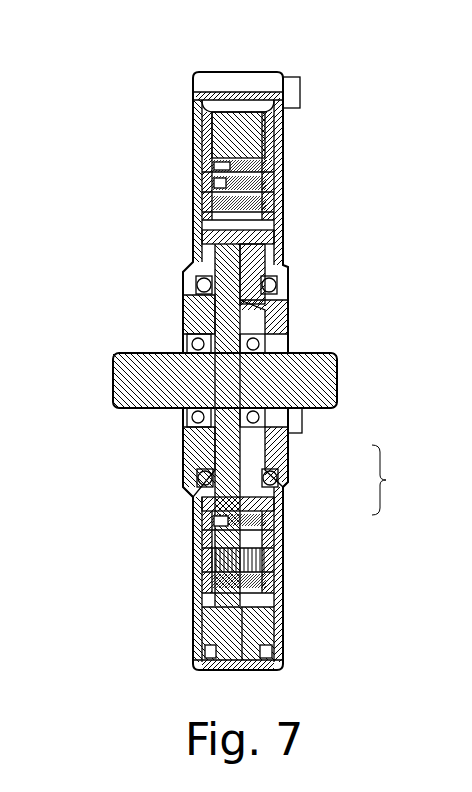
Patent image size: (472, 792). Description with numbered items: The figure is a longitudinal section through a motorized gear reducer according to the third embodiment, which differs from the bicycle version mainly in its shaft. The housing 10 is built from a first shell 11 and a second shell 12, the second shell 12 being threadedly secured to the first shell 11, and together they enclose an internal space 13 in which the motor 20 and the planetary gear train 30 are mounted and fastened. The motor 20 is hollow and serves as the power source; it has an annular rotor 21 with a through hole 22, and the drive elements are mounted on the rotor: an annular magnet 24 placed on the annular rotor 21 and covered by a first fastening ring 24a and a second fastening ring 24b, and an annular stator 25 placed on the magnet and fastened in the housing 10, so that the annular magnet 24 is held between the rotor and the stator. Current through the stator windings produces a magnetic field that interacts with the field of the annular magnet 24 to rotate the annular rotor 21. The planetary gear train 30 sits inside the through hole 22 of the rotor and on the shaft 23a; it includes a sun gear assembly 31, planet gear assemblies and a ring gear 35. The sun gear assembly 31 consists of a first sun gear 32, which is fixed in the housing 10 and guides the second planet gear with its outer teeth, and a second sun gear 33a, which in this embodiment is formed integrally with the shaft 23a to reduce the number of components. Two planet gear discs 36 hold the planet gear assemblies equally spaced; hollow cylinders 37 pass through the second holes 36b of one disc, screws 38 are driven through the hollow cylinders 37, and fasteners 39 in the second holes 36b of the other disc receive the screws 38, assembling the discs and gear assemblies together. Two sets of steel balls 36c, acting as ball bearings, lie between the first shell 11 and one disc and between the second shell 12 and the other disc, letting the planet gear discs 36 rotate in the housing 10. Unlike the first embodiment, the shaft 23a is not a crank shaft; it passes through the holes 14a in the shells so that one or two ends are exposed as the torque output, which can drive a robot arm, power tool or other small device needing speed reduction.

The housing 10 is at (190, 173).
The first shell 11 is at (288, 668).
The second shell 12 is at (200, 668).
The internal space 13 is at (286, 108).
The holes 14a is at (185, 342).
The motor 20 is at (191, 139).
The annular rotor 21 is at (193, 185).
The through hole 22 is at (193, 208).
The shaft 23a is at (128, 383).
The annular magnet 24 is at (285, 172).
The first fastening ring 24a is at (285, 630).
The second fastening ring 24b is at (205, 628).
The annular stator 25 is at (237, 92).
The planetary gear train 30 is at (190, 572).
The sun gear assembly 31 is at (393, 480).
The first sun gear 32 is at (288, 498).
The second sun gear 33a is at (290, 456).
The ring gear 35 is at (285, 186).
The planet gear discs 36 is at (285, 262).
The second holes 36b is at (285, 546).
The steel balls 36c is at (198, 283).
The hollow cylinders 37 is at (210, 510).
The screws 38 is at (285, 530).
The fasteners 39 is at (207, 543).